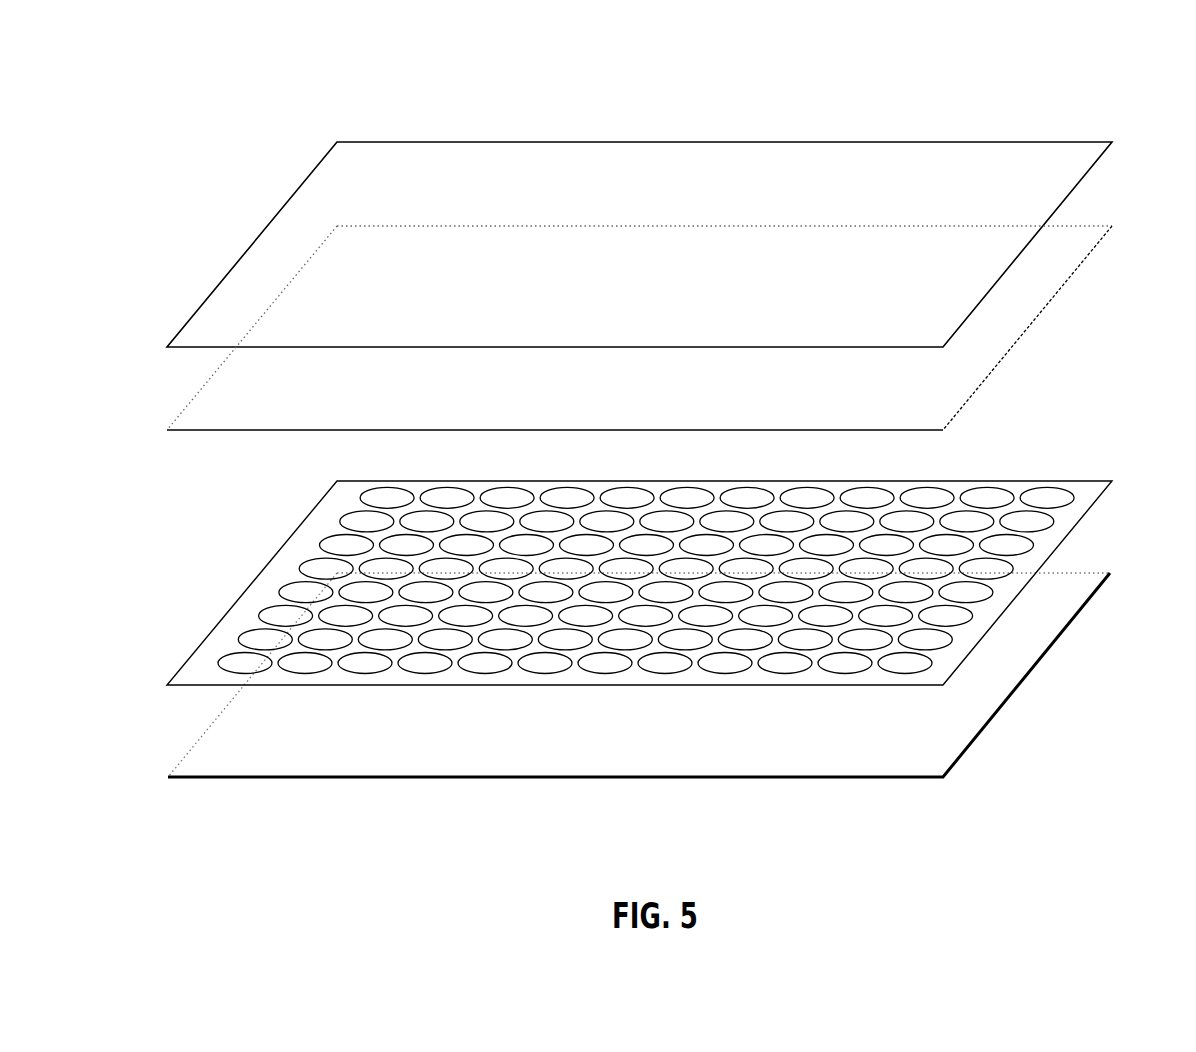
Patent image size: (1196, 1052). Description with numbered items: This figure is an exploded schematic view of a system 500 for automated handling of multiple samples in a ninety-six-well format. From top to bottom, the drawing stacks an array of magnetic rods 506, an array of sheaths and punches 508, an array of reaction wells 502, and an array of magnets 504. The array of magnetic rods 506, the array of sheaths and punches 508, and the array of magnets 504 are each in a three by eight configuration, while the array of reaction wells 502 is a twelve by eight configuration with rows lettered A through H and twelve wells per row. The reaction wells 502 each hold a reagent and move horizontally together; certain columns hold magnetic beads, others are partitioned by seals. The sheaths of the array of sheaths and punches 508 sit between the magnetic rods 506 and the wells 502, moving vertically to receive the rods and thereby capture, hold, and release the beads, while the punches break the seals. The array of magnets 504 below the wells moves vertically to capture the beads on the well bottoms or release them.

The system for automated handling of multiple samples 500 is at (695, 34).
The array of reaction wells 502 is at (1115, 478).
The array of magnets 504 is at (1107, 583).
The array of magnetic rods 506 is at (1080, 140).
The array of sheaths and punches 508 is at (1100, 238).